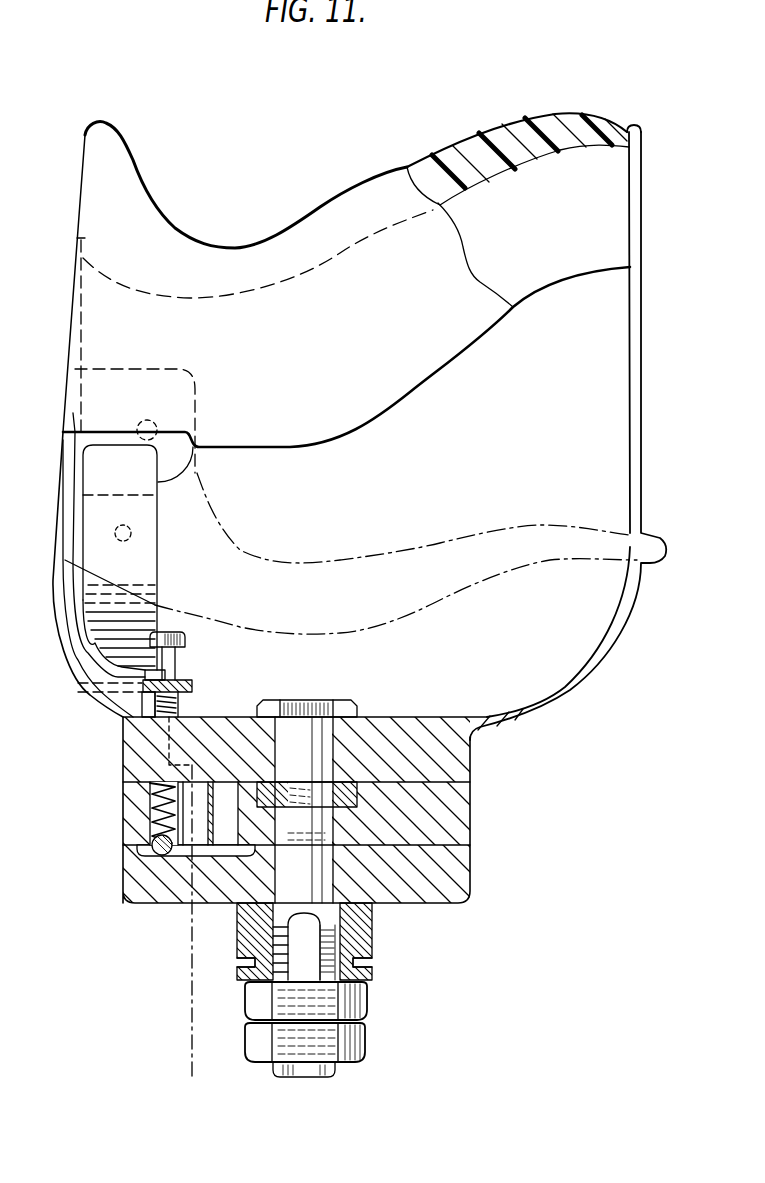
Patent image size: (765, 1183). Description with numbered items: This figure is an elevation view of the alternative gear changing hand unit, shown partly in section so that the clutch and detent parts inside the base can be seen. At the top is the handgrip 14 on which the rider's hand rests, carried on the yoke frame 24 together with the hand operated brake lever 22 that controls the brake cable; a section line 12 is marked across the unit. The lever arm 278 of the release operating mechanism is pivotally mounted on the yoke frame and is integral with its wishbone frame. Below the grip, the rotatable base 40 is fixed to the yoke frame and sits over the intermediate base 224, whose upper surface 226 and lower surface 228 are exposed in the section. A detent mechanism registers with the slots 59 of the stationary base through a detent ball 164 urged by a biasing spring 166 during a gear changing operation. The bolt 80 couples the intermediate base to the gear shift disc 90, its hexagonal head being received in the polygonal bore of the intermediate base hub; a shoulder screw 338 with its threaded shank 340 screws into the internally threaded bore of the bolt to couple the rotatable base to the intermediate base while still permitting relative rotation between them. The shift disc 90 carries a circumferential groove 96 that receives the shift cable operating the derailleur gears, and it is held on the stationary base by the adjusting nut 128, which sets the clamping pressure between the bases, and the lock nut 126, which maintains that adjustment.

The handgrip 14 is at (505, 112).
The yoke frame 24 is at (637, 420).
The brake lever 22 is at (478, 540).
The section line 12- 12 is at (173, 1066).
The lever arm 278 is at (195, 687).
The rotatable base 40 is at (130, 757).
The upper surface 226 is at (460, 777).
The intermediate base 224 is at (457, 812).
The lower surface 228 is at (457, 857).
The biasing spring 166 is at (125, 832).
The trough-like slot 59 is at (220, 848).
The detent ball 164 is at (165, 858).
The shoulder screw 338 is at (362, 698).
The bolt 80 is at (333, 908).
The threaded shank 340 is at (323, 797).
The gear shift disc 90 is at (372, 942).
The circumferential groove 96 is at (372, 963).
The adjusting nut 128 is at (357, 1003).
The lock nut 126 is at (360, 1043).